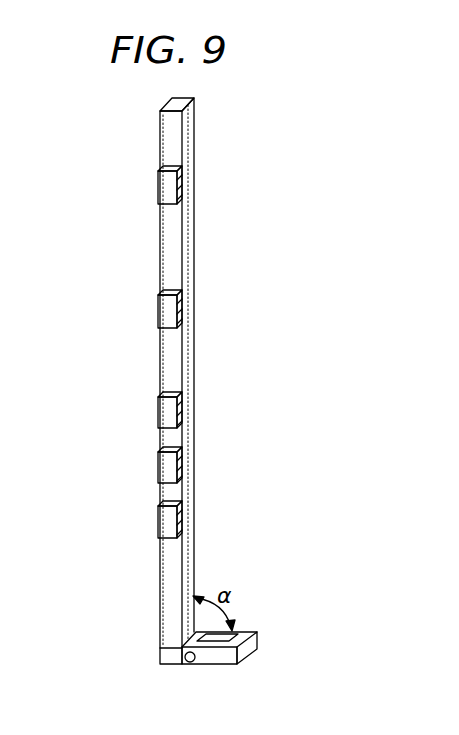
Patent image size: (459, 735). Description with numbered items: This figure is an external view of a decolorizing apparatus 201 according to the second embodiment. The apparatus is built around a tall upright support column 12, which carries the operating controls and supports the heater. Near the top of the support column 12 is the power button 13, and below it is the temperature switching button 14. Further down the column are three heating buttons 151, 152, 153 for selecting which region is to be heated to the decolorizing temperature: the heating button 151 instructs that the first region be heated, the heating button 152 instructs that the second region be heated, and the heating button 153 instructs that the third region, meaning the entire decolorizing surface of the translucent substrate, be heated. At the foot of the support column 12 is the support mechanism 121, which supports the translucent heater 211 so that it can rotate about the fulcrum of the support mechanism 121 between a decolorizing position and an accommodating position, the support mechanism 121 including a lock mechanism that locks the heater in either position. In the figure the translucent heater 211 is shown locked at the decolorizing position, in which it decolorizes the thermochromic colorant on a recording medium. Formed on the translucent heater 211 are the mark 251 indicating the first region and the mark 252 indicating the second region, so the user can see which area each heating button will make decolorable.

The decolorizing apparatus 201 is at (145, 381).
The support column 12 is at (172, 247).
The power button 13 is at (170, 187).
The temperature switching button 14 is at (170, 312).
The heating button 151 is at (170, 414).
The heating button 152 is at (170, 470).
The heating button 153 is at (170, 523).
The translucent heater 211 is at (198, 636).
The mark 251 is at (211, 632).
The mark 252 is at (223, 643).
The support mechanism 121 is at (183, 657).